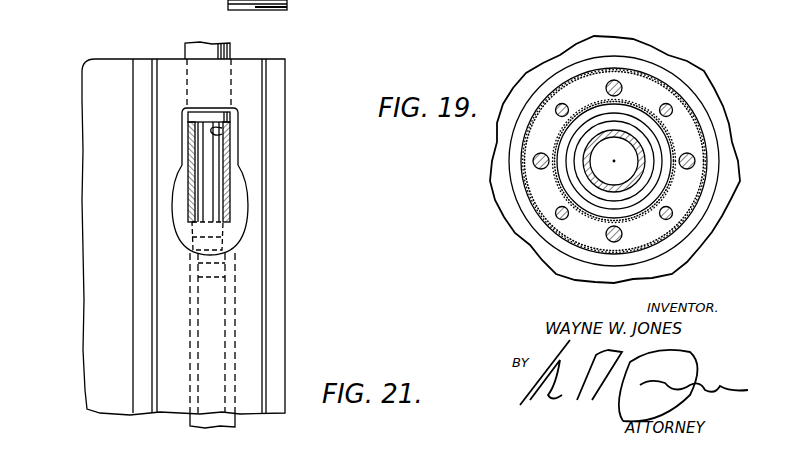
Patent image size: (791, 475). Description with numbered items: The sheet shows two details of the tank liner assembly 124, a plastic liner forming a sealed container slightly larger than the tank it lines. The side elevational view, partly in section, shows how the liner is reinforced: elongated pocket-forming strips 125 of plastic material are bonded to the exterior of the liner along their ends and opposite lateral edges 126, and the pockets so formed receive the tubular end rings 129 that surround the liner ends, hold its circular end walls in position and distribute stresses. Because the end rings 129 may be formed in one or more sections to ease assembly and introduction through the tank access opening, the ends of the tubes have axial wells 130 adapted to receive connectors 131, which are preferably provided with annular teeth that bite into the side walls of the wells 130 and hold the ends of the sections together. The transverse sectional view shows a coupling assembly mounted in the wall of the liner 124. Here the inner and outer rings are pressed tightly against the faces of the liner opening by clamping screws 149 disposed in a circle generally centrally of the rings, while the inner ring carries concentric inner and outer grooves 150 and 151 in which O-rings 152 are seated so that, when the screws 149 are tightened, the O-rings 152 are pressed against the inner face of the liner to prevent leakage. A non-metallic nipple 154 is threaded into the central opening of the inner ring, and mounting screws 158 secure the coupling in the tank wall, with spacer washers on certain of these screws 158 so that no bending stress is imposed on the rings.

In FIG. 21, the liner assembly 124 is at (92, 106).
In FIG. 19, the liner assembly 124 is at (689, 252).
In FIG. 21, the pocket-forming strips 125 is at (252, 95).
In FIG. 21, the lateral edges 126 is at (141, 64).
In FIG. 21, the tubular end rings 129 is at (198, 45).
In FIG. 21, the axial wells 130 is at (222, 133).
In FIG. 21, the connectors 131 is at (222, 195).
In FIG. 19, the clamping screws 149 is at (558, 105).
In FIG. 19, the inner groove 150 is at (692, 105).
In FIG. 19, the outer groove 151 is at (665, 139).
In FIG. 19, the O-rings 152 is at (667, 170).
In FIG. 19, the non-metallic nipple 154 is at (630, 138).
In FIG. 19, the mounting screws 158 is at (620, 82).